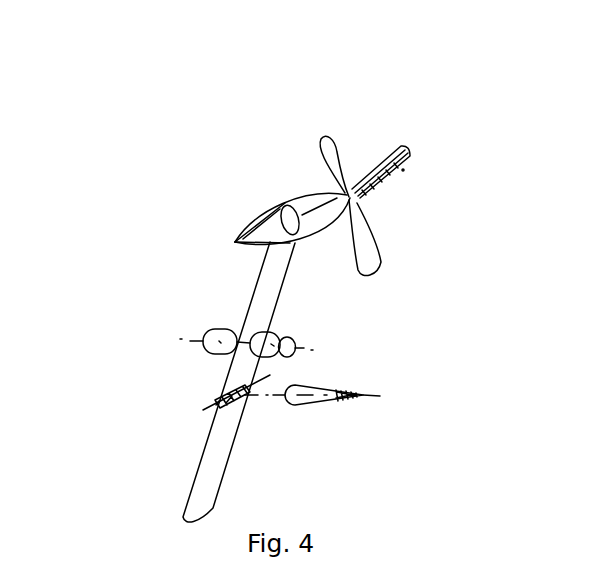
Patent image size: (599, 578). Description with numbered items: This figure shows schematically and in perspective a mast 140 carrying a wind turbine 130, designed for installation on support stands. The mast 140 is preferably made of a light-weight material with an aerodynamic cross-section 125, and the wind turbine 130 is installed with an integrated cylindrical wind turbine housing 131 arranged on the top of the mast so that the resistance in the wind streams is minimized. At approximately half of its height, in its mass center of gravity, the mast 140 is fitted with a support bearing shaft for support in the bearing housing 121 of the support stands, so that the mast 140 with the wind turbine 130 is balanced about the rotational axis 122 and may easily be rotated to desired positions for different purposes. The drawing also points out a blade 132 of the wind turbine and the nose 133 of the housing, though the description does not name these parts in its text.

The wind turbine 130 is at (415, 197).
The cylindrical wind turbine housing 131 is at (280, 205).
The rotor blade 132 is at (334, 152).
The nose of body 133 is at (236, 243).
The bearing housing 121 is at (283, 333).
The rotational axis 122 is at (322, 349).
The aerodynamic cross-section 125 is at (313, 400).
The mast 140 is at (222, 438).